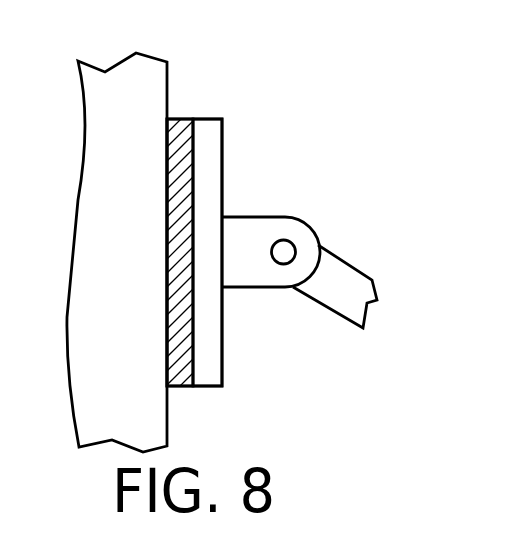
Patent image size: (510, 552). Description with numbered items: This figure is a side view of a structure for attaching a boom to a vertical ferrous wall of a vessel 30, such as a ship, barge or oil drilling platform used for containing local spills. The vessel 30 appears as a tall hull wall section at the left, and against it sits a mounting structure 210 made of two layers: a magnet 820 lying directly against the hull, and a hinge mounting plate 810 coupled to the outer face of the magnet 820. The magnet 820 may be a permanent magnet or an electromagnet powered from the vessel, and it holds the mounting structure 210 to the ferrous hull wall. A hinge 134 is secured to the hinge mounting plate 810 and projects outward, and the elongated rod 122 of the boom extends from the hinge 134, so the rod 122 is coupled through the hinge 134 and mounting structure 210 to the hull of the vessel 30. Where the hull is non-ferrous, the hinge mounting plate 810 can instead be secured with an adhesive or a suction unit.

The ship 30 is at (130, 415).
The mounting structure 210 is at (224, 258).
The hinge mounting plate 810 is at (222, 344).
The magnet 820 is at (181, 386).
The hinge 134 is at (257, 217).
The elongated rod 122 is at (352, 263).